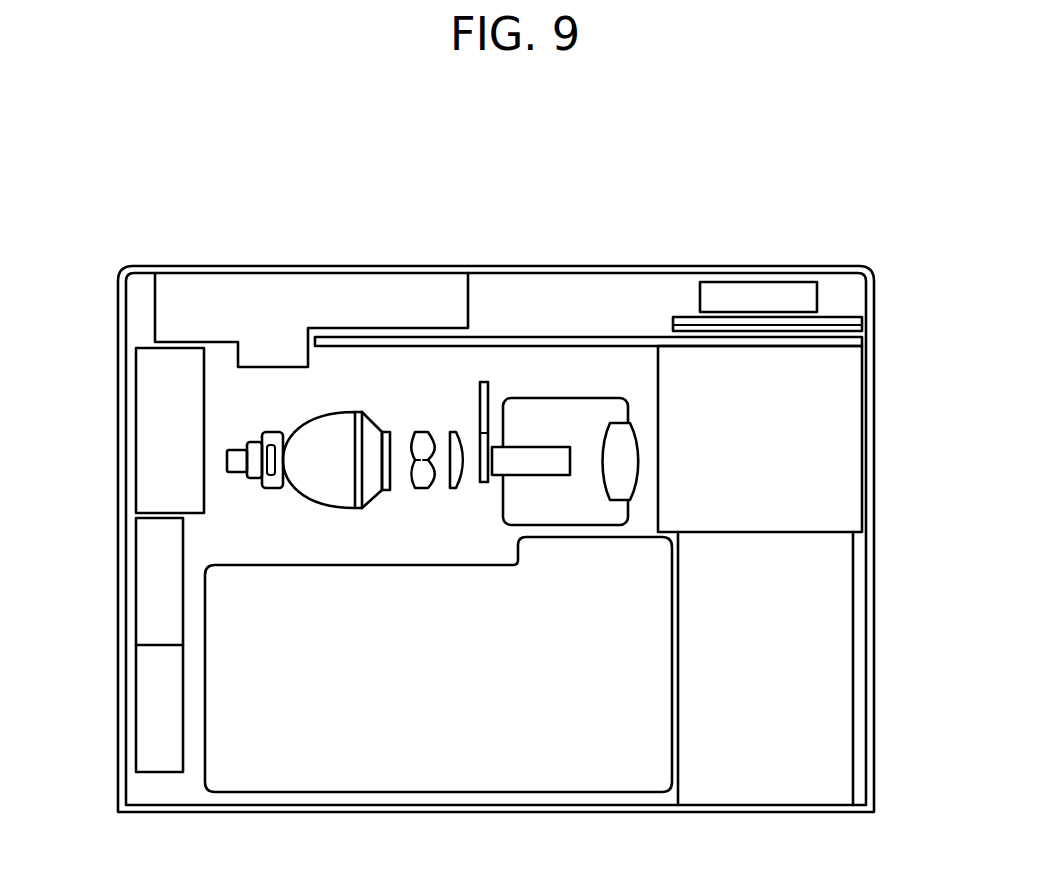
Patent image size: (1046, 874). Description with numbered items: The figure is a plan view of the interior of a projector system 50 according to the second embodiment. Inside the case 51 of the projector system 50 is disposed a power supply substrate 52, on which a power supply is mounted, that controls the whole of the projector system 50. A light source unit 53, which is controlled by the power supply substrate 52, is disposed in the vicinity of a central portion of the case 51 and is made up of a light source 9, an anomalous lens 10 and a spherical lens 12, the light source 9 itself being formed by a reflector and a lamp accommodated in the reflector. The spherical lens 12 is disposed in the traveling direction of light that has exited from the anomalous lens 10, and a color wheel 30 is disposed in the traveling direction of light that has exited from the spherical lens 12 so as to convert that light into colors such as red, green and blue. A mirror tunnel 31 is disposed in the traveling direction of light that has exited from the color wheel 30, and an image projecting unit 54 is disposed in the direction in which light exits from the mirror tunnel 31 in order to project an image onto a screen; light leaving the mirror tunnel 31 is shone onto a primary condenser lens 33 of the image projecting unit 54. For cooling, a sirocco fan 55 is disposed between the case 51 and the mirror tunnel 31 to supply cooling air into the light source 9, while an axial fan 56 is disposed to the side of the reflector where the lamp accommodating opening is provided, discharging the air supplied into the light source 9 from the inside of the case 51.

The projector system 50 is at (530, 172).
The image projecting unit 54 is at (890, 472).
The case 51 is at (341, 267).
The axial fan 56 is at (153, 433).
The power supply substrate 52 is at (450, 777).
The light source 9 is at (365, 390).
The light source unit 53 is at (432, 403).
The anomalous lens 10 is at (419, 433).
The spherical lens 12 is at (455, 437).
The color wheel 30 is at (490, 395).
The mirror tunnel 31 is at (524, 455).
The sirocco fan 55 is at (599, 408).
The primary condenser lens 33 is at (628, 443).